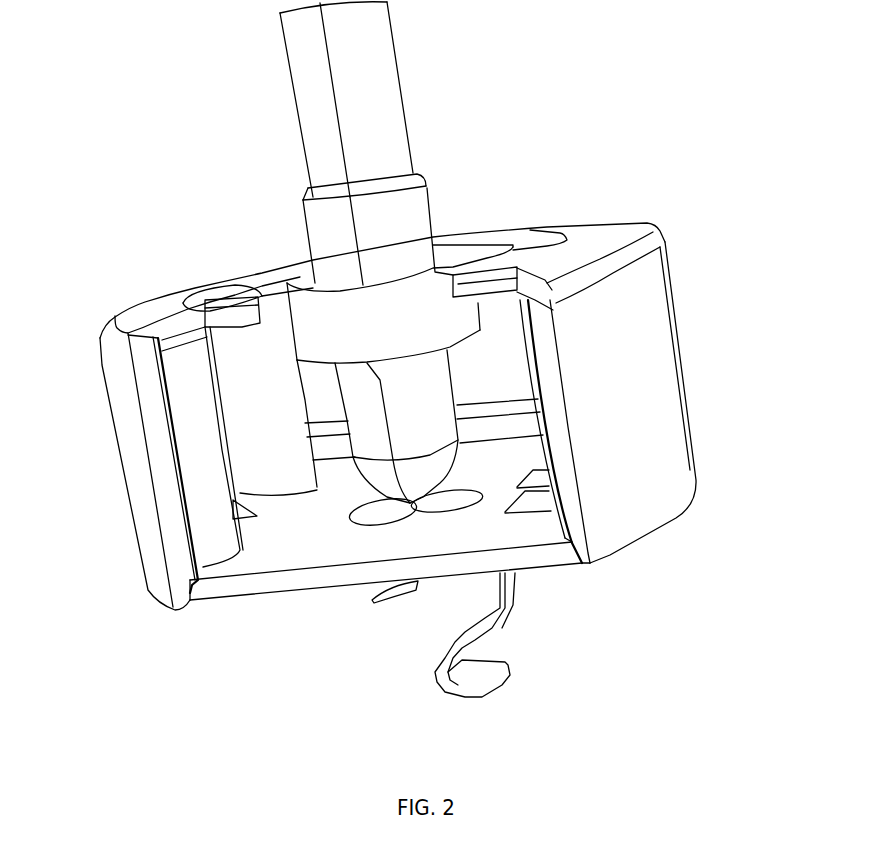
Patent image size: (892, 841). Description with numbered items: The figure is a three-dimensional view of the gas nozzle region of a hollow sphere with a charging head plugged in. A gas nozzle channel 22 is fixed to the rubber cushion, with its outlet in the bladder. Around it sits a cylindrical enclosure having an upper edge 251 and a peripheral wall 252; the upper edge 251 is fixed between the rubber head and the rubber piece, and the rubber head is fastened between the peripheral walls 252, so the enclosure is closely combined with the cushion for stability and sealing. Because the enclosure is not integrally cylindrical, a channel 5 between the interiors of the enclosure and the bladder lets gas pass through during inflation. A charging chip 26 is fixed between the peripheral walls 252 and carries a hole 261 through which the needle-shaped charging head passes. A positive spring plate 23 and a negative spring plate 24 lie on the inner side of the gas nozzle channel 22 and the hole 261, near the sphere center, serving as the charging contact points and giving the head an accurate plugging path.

The gas nozzle channel 22 is at (380, 148).
The channel between interiors of the enclosure and the bladder 5 is at (281, 330).
The upper edge 251 is at (587, 245).
The peripheral wall 252 is at (647, 337).
The charging chip 26 is at (257, 580).
The negative spring plate 24 is at (383, 602).
The hole 261 is at (437, 517).
The positive spring plate 23 is at (502, 628).